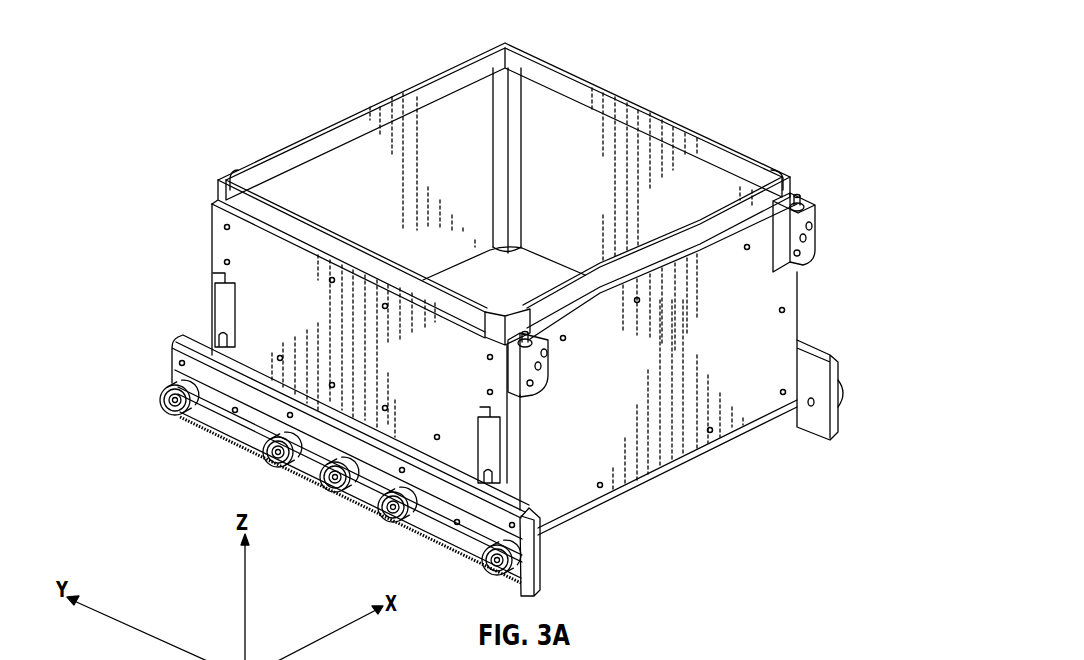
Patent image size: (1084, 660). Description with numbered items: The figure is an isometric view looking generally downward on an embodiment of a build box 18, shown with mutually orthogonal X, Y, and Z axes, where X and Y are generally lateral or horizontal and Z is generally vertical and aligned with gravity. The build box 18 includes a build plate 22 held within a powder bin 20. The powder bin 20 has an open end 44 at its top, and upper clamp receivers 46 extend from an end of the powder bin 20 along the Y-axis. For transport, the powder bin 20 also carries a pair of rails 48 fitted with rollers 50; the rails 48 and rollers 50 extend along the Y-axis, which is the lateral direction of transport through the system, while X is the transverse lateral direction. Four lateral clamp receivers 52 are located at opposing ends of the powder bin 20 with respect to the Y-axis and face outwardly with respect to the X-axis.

The build box 18 is at (504, 330).
The open end 44 is at (415, 82).
The build plate 22 is at (487, 277).
The powder bin 20 is at (783, 325).
The upper clamp receivers 46 is at (813, 222).
The rails 48 is at (822, 428).
The lateral clamp receivers 52 is at (217, 302).
The rollers 50 is at (167, 390).